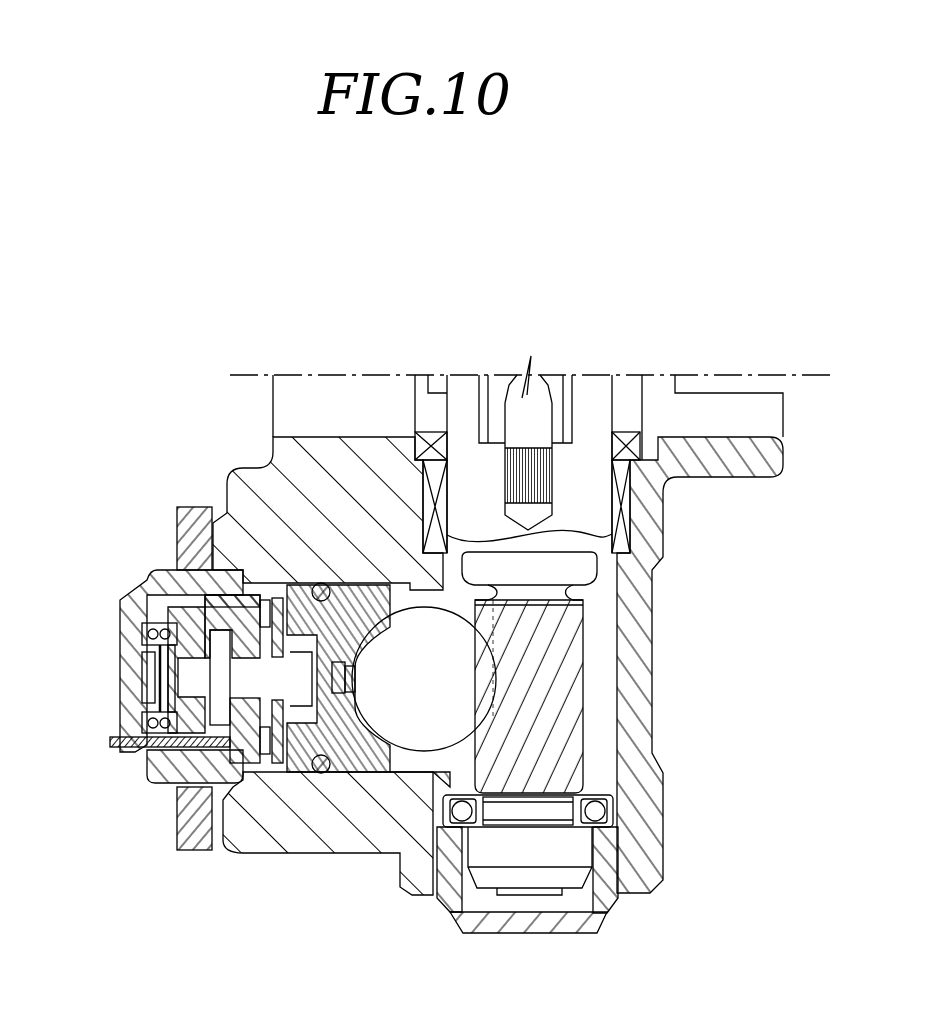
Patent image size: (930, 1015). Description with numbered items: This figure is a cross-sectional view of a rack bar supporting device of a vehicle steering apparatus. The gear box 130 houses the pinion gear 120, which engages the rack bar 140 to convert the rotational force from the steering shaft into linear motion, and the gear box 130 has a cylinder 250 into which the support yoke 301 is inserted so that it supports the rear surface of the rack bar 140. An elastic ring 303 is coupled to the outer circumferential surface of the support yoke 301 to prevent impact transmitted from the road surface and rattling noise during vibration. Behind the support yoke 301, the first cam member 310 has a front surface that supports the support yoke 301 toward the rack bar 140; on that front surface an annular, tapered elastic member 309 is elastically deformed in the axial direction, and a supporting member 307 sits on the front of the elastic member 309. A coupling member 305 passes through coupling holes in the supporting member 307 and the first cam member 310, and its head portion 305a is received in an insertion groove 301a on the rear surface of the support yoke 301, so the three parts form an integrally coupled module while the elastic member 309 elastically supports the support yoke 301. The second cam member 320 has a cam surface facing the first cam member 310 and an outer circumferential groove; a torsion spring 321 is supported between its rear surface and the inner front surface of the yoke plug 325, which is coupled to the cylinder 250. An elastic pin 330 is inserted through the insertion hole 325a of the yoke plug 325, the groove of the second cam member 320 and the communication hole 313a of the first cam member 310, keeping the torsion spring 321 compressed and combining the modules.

The gear box 130 is at (243, 478).
The pinion gear 120 is at (567, 673).
The rack bar 140 is at (445, 705).
The cylinder 250 is at (433, 890).
The support yoke 301 is at (316, 775).
The insertion groove 301a is at (288, 776).
The elastic ring 303 is at (367, 775).
The coupling member 305 is at (162, 787).
The head portion 305a is at (237, 790).
The supporting member 307 is at (275, 592).
The elastic member 309 is at (225, 588).
The first cam member 310 is at (157, 578).
The communication hole 313a is at (177, 833).
The second cam member 320 is at (160, 600).
The torsion spring 321 is at (140, 692).
The yoke plug 325 is at (128, 638).
The insertion hole 325a is at (110, 742).
The elastic pin 330 is at (125, 757).